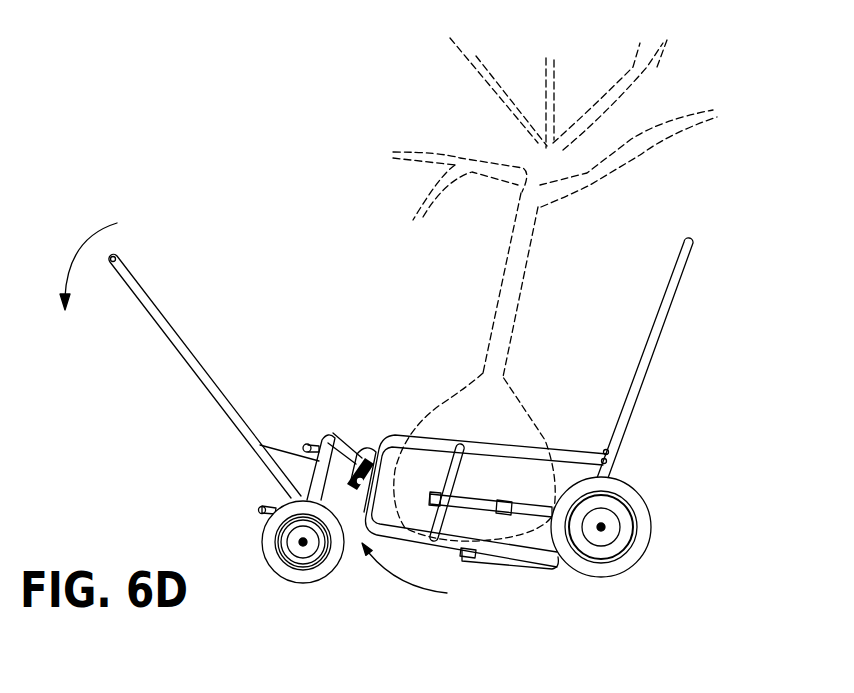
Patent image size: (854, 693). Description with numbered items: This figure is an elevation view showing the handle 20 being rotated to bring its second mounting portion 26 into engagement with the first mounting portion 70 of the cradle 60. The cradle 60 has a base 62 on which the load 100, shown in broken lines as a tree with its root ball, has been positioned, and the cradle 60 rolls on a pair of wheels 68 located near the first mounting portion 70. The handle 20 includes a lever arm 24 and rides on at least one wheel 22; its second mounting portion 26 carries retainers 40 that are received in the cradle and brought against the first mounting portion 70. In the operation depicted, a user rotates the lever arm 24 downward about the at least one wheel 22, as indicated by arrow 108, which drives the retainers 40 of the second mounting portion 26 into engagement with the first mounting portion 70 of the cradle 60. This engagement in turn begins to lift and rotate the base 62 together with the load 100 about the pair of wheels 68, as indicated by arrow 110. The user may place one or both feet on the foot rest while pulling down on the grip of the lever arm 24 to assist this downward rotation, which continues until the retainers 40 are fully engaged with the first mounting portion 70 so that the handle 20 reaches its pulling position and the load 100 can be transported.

The handle 20 is at (134, 376).
The at least one wheel 22 is at (268, 535).
The lever arm 24 is at (185, 340).
The second mounting portion 26 is at (317, 418).
The retainers 40 is at (375, 452).
The cradle 60 is at (684, 407).
The base 62 is at (463, 552).
The pair of wheels 68 is at (642, 516).
The first mounting portion 70 is at (374, 447).
The load 100 is at (555, 289).
The arrow 108 is at (82, 248).
The arrow 110 is at (407, 587).